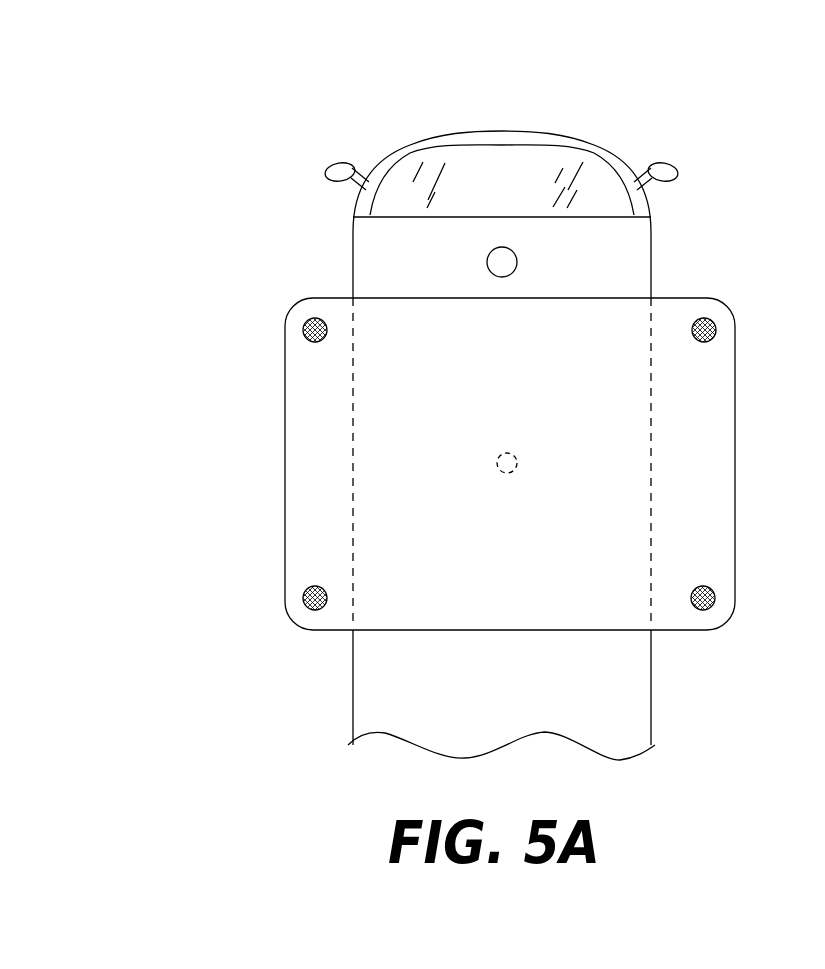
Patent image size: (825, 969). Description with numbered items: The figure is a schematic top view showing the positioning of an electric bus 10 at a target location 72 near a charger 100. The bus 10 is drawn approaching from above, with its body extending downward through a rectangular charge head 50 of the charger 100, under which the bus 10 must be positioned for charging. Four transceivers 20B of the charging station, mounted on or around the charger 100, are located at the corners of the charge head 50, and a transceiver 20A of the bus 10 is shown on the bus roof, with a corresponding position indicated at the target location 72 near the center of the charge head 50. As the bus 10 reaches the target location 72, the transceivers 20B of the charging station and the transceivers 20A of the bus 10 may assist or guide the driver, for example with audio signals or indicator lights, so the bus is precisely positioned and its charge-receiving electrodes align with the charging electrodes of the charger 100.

The electric bus 10 is at (621, 705).
The transceivers of the bus 20A is at (502, 247).
The transceivers of the charging station 20B is at (308, 319).
The charge head 50 is at (285, 405).
The target location 72 is at (529, 451).
The charger 100 is at (246, 479).